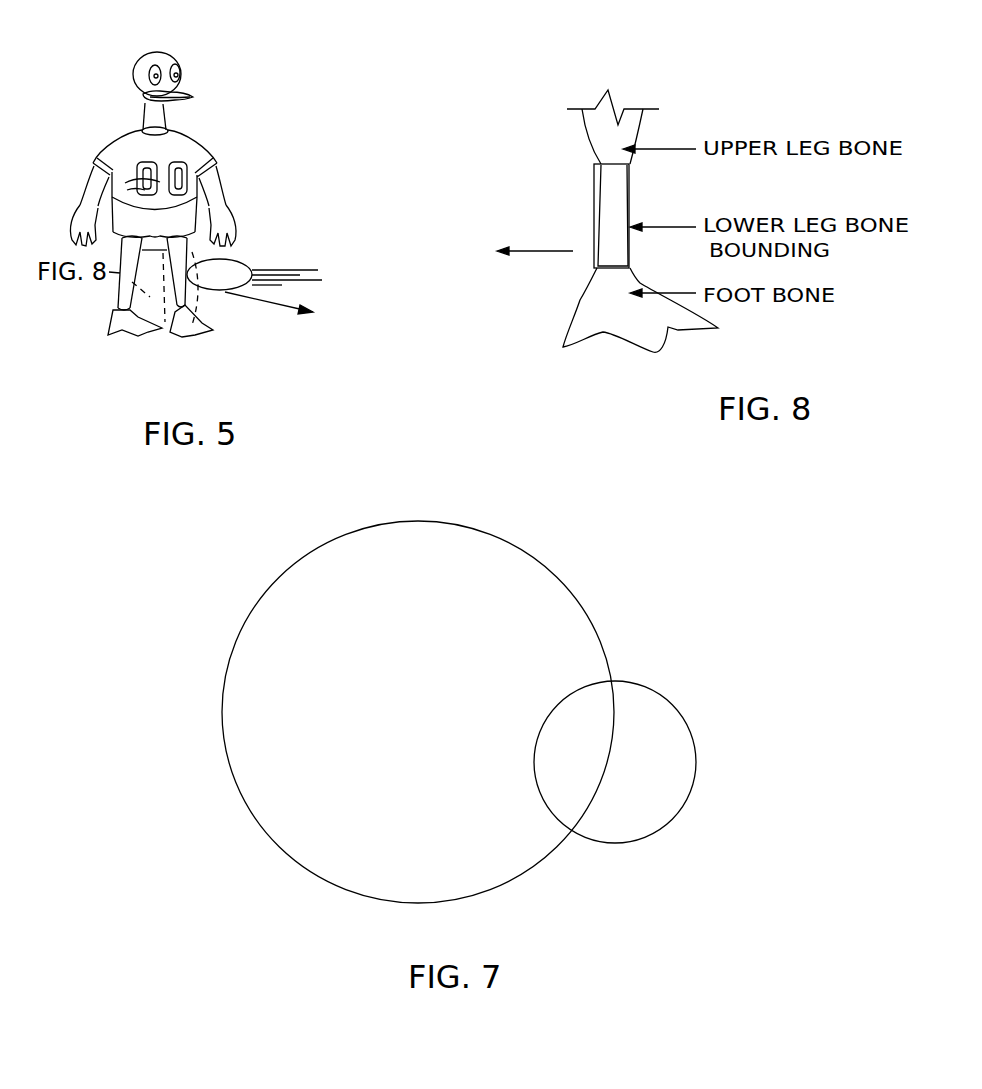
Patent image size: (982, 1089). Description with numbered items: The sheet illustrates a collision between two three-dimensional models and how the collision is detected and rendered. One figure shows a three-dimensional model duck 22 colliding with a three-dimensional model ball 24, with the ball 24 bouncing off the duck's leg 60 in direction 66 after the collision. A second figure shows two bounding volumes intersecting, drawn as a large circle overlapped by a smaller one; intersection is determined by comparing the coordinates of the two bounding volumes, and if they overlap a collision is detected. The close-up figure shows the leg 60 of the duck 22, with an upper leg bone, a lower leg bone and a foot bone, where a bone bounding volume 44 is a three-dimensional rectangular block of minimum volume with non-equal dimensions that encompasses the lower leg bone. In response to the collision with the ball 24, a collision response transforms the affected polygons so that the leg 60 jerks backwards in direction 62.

In FIG. 5, the 3D model (duck) 22 is at (175, 63).
In FIG. 5, the 3D model (ball) 24 is at (247, 266).
In FIG. 8, the bone bounding volume 44 is at (594, 193).
In FIG. 5, the leg 60 is at (187, 322).
In FIG. 8, the leg 60 is at (629, 194).
In FIG. 8, the direction 62 is at (546, 252).
In FIG. 5, the direction 66 is at (257, 302).